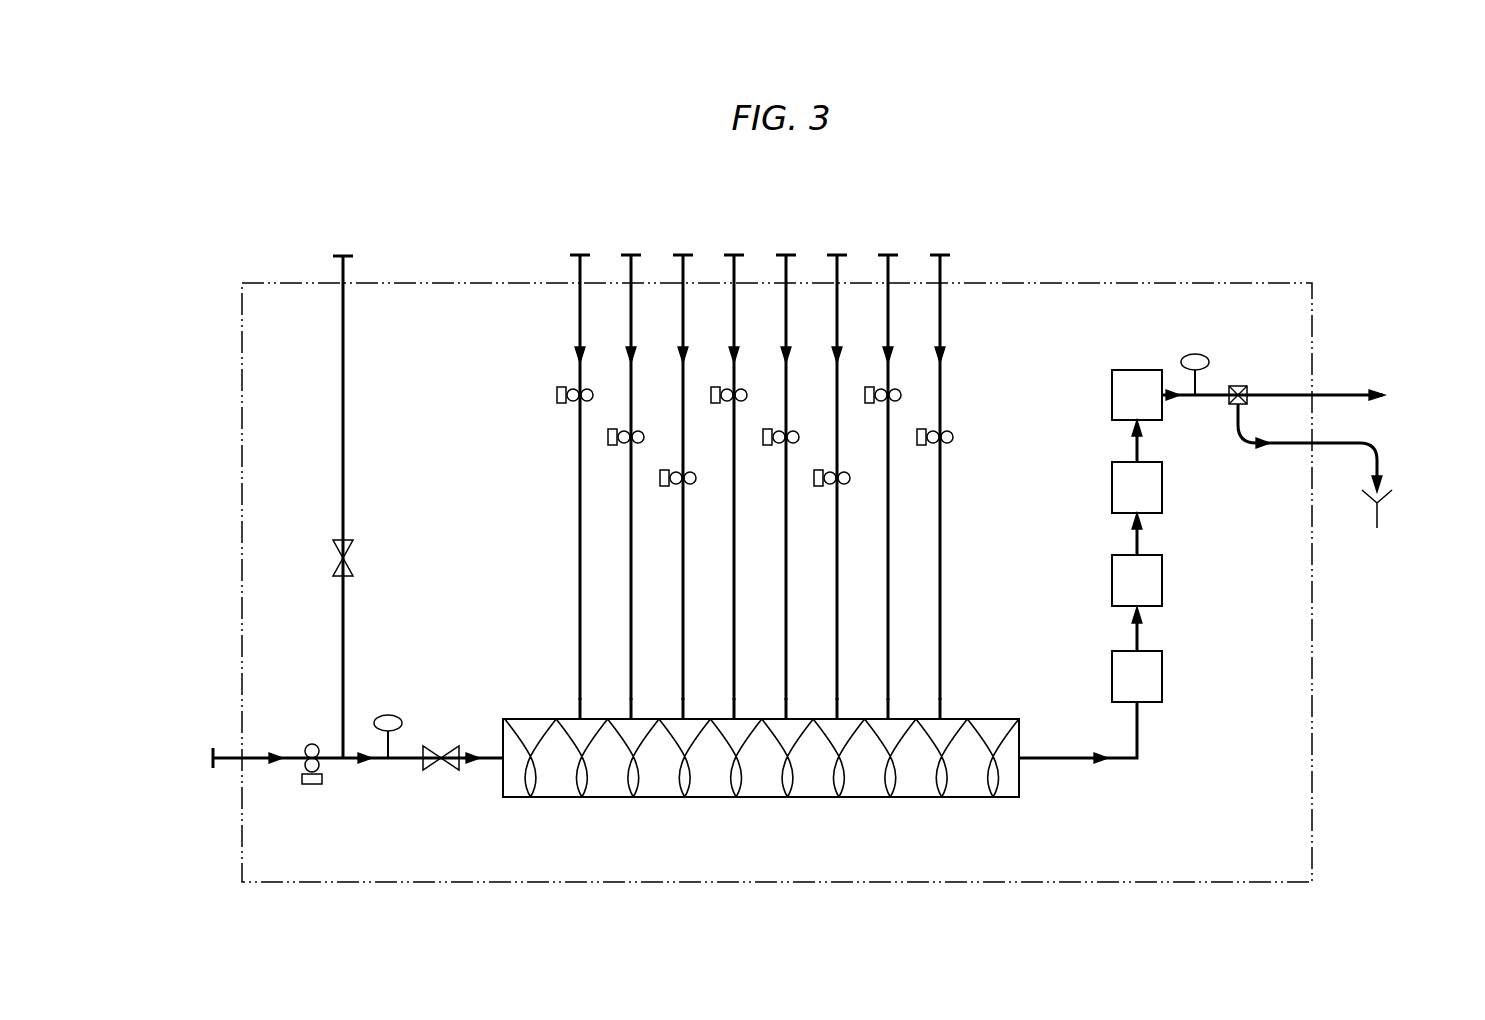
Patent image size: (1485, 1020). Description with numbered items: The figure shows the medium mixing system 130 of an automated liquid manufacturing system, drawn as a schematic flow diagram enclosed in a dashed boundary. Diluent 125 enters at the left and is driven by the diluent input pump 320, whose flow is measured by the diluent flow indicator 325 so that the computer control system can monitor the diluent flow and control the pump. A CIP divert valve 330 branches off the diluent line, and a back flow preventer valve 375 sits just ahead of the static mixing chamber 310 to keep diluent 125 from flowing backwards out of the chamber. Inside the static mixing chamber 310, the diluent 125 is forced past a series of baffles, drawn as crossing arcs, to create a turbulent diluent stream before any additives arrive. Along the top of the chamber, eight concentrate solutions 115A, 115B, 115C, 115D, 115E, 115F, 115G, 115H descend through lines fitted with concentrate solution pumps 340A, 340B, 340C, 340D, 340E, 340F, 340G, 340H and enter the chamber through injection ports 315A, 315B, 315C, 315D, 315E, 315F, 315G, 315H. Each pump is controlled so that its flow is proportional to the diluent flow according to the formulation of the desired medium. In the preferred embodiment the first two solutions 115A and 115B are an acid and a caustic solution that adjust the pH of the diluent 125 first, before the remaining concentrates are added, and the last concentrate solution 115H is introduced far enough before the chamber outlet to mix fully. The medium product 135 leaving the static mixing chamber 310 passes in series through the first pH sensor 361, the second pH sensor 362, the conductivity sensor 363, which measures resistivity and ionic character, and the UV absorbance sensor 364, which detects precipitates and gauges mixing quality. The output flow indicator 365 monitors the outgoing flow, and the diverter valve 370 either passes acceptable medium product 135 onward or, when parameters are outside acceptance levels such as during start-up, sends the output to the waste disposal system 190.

The concentrate solution 115A is at (577, 254).
The concentrate solution 115B is at (628, 254).
The concentrate solution 115C is at (680, 254).
The concentrate solution 115D is at (731, 254).
The concentrate solution 115E is at (783, 254).
The concentrate solution 115F is at (834, 254).
The concentrate solution 115G is at (885, 254).
The concentrate solution 115H is at (937, 254).
The diluent 125 is at (212, 757).
The medium mixing system 130 is at (886, 929).
The medium product 135 is at (1346, 392).
The waste disposal system 190 is at (1383, 500).
The static mixing chamber 310 is at (1020, 786).
The injection port 315A is at (578, 718).
The injection port 315B is at (627, 718).
The injection port 315C is at (679, 718).
The injection port 315D is at (730, 718).
The injection port 315E is at (782, 718).
The injection port 315F is at (833, 718).
The injection port 315G is at (884, 718).
The injection port 315H is at (936, 718).
The diluent input pump 320 is at (309, 743).
The diluent flow indicator 325 is at (387, 714).
The CIP divert valve 330 is at (350, 549).
The concentrate solution pump 340A is at (557, 403).
The concentrate solution pump 340B is at (611, 445).
The concentrate solution pump 340C is at (663, 486).
The concentrate solution pump 340D is at (714, 403).
The concentrate solution pump 340E is at (766, 445).
The concentrate solution pump 340F is at (817, 486).
The concentrate solution pump 340G is at (868, 403).
The concentrate solution pump 340H is at (920, 445).
The first pH sensor 361 is at (1112, 673).
The second pH sensor 362 is at (1112, 580).
The conductivity sensor 363 is at (1112, 487).
The UV absorbance sensor 364 is at (1112, 395).
The output flow indicator 365 is at (1193, 354).
The diverter valve 370 is at (1243, 386).
The back flow preventer valve 375 is at (437, 770).